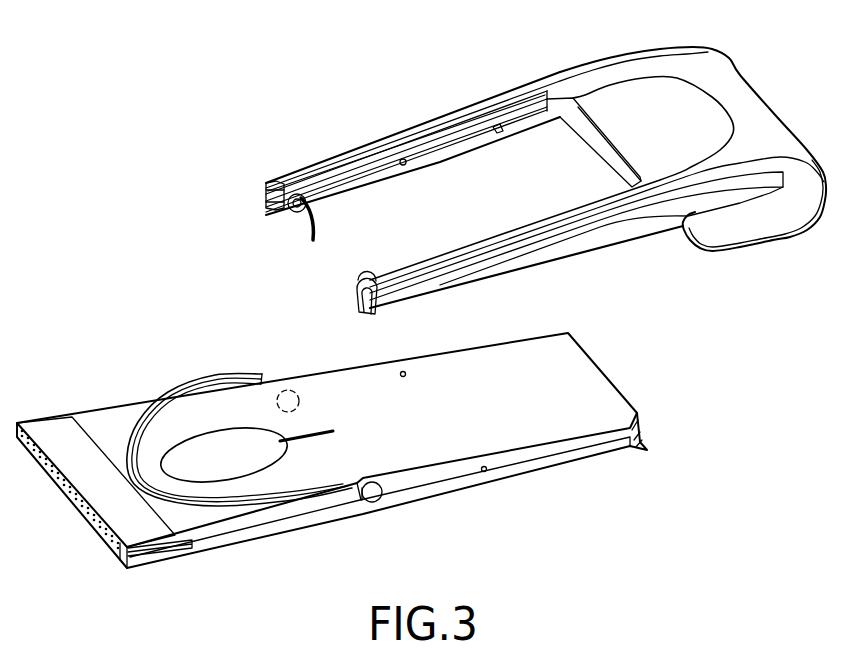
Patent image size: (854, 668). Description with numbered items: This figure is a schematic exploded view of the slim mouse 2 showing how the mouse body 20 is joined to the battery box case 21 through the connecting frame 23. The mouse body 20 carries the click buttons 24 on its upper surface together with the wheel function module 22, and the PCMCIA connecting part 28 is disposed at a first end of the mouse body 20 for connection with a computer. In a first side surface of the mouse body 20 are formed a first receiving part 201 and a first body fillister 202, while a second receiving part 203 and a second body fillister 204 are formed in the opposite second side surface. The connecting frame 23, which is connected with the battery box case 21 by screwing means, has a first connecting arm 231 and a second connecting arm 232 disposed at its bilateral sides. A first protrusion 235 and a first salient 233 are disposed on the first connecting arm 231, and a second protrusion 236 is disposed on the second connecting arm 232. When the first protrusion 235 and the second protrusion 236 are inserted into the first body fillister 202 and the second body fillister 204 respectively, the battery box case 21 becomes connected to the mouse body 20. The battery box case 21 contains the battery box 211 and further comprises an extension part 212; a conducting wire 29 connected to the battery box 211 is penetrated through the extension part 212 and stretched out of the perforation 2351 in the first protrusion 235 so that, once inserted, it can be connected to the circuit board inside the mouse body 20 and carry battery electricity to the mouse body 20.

The slim mouse 2 is at (155, 96).
The mouse body 20 is at (105, 431).
The battery box case 21 is at (704, 73).
The wheel function module 22 is at (218, 467).
The connecting frame 23 is at (498, 128).
The click buttons 24 is at (217, 413).
The PCMCIA connecting part 28 is at (100, 487).
The conducting wire 29 is at (313, 222).
The first receiving part 201 is at (405, 370).
The first body fillister 202 is at (287, 389).
The second receiving part 203 is at (488, 472).
The second body fillister 204 is at (380, 500).
The battery box 211 is at (770, 222).
The extension part 212 is at (489, 101).
The first connecting arm 231 is at (343, 177).
The second connecting arm 232 is at (367, 297).
The first salient 233 is at (402, 157).
The first protrusion 235 is at (291, 216).
The second protrusion 236 is at (362, 277).
The perforation 2351 is at (281, 183).